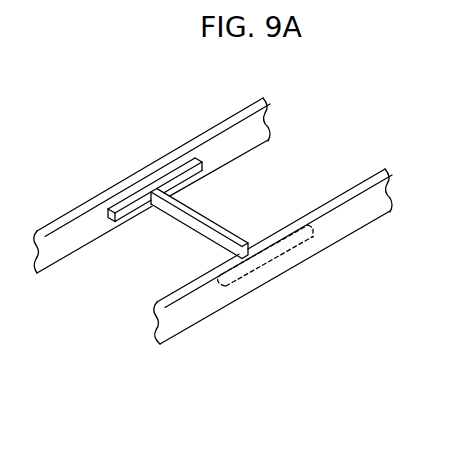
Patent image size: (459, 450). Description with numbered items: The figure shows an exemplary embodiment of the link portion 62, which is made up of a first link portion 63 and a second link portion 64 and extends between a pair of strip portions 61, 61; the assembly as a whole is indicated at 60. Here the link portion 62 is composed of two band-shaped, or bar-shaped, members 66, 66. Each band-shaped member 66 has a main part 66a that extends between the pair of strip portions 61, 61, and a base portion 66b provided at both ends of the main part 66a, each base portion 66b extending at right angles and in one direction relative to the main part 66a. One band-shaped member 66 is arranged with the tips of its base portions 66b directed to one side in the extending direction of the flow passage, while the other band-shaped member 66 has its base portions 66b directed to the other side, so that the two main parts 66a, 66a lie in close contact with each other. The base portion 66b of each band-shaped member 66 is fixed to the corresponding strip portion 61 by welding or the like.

The rack assembly 60 is at (230, 230).
The strip portion 61 is at (71, 240).
The link portion 62 is at (288, 183).
The first link portion 63 is at (199, 224).
The second link portion 64 is at (222, 214).
The band-shaped member 66 is at (203, 242).
The main part 66a is at (137, 206).
The base portion 66b is at (215, 292).